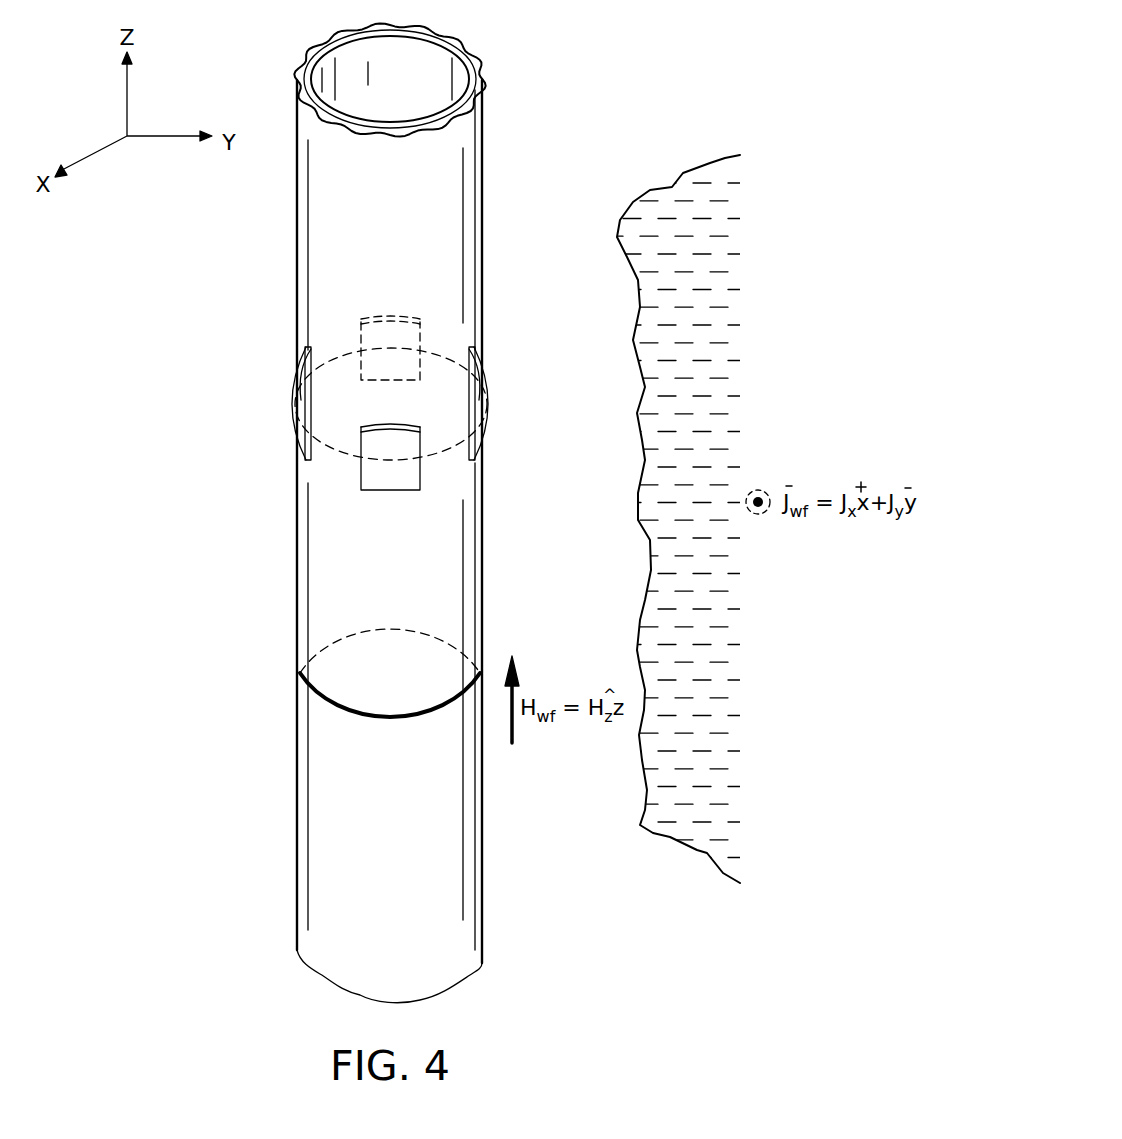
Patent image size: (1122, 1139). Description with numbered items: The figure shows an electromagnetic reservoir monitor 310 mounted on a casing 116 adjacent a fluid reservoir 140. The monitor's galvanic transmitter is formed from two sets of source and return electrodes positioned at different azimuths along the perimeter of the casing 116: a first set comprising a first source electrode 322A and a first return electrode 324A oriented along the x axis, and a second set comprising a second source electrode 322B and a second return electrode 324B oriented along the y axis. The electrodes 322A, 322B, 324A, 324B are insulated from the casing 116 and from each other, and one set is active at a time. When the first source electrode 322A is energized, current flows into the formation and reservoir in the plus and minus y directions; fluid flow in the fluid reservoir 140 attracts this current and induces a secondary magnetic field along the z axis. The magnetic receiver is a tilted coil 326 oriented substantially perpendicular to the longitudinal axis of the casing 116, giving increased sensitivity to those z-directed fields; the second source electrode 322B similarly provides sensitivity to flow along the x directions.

The casing 116 is at (483, 183).
The fluid reservoir 140 is at (640, 793).
The electromagnetic reservoir monitor 310 is at (181, 276).
The first source electrode 322A is at (390, 491).
The second source electrode 322B is at (390, 315).
The first return electrode 324A is at (292, 405).
The second return electrode 324B is at (488, 405).
The tilted coil 326 is at (287, 713).